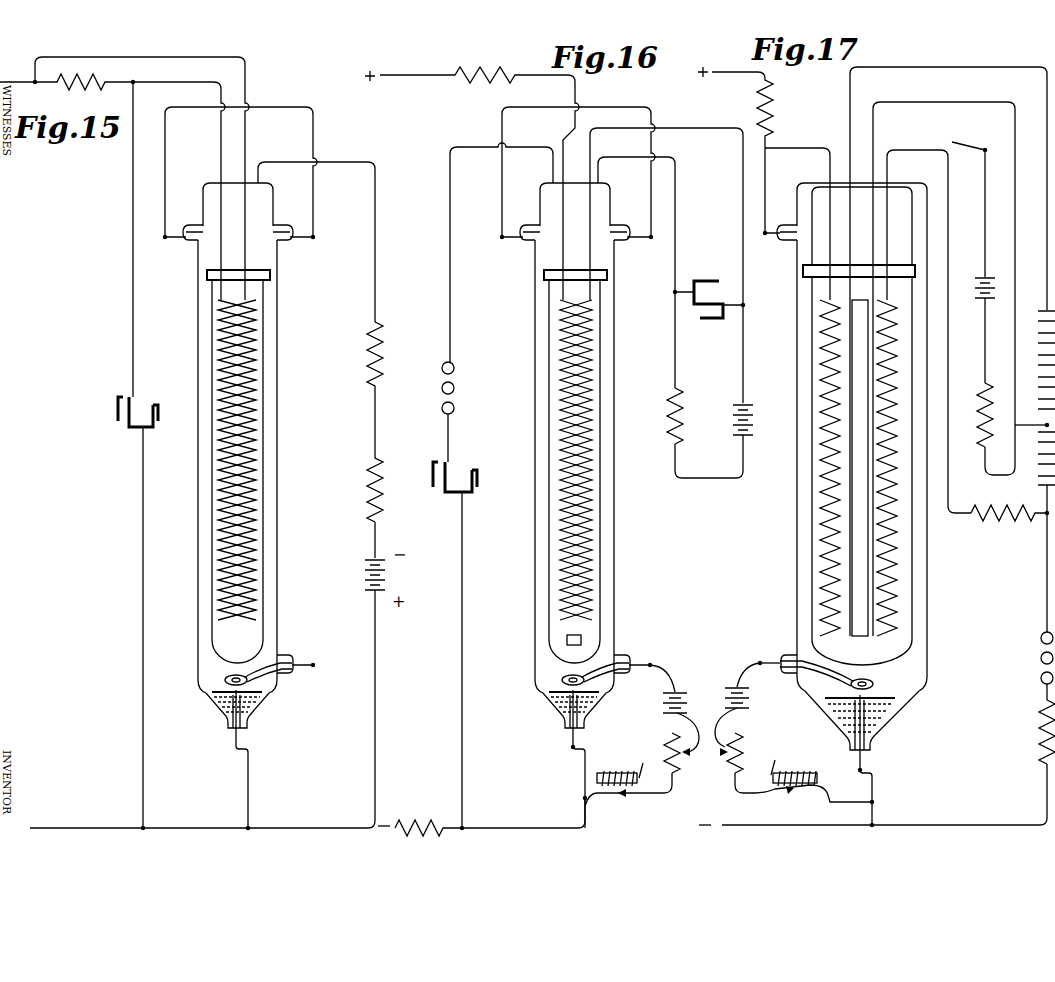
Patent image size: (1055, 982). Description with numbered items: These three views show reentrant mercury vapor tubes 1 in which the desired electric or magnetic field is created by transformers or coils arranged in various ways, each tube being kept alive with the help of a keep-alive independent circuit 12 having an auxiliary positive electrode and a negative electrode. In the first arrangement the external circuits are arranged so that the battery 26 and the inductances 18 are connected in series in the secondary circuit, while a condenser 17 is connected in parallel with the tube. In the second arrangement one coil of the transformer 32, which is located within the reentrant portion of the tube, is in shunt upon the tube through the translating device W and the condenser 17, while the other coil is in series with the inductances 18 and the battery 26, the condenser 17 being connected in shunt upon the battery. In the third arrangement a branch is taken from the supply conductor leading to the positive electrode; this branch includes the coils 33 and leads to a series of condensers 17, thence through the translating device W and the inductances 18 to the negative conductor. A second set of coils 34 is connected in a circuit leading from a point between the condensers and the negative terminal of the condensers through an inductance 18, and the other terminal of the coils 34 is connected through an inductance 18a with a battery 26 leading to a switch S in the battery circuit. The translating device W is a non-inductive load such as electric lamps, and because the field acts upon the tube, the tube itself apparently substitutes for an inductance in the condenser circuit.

In FIG. 15, the mercury vapor tube 1 is at (278, 417).
In FIG. 16, the mercury vapor tube 1 is at (613, 467).
In FIG. 17, the mercury vapor tube 1 is at (852, 504).
In FIG. 16, the independent circuit 12 is at (642, 735).
In FIG. 17, the independent circuit 12 is at (793, 732).
In FIG. 15, the condenser 17 is at (146, 406).
In FIG. 16, the condenser 17 is at (588, 376).
In FIG. 17, the condenser 17 is at (1037, 391).
In FIG. 15, the inductance 18 is at (387, 422).
In FIG. 16, the inductance 18 is at (662, 416).
In FIG. 17, the inductance 18 is at (1040, 740).
In FIG. 17, the inductance 18a is at (969, 415).
In FIG. 15, the battery 26 is at (388, 556).
In FIG. 16, the battery 26 is at (730, 420).
In FIG. 17, the battery 26 is at (976, 320).
In FIG. 15, the transformer 32 is at (248, 338).
In FIG. 16, the transformer 32 is at (592, 398).
In FIG. 17, the coils 33 is at (823, 468).
In FIG. 17, the second set of coils 34 is at (893, 468).
In FIG. 16, the translating device W is at (459, 388).
In FIG. 17, the translating device W is at (1036, 658).
In FIG. 17, the switch S is at (969, 199).